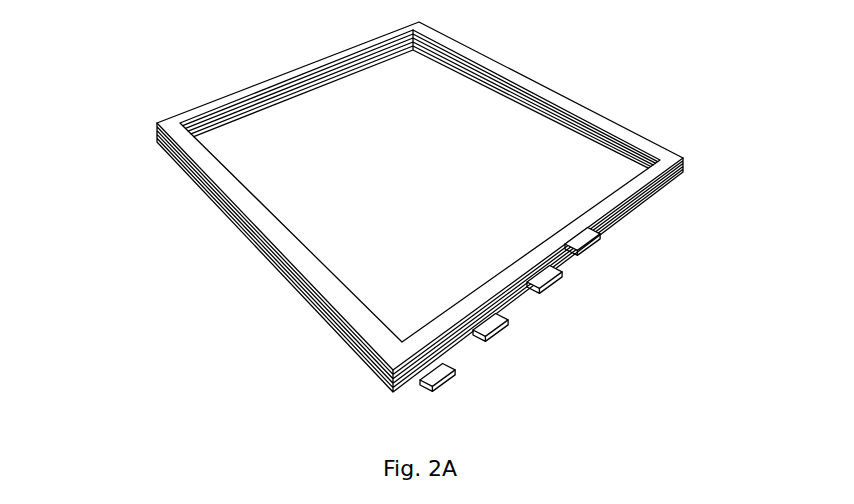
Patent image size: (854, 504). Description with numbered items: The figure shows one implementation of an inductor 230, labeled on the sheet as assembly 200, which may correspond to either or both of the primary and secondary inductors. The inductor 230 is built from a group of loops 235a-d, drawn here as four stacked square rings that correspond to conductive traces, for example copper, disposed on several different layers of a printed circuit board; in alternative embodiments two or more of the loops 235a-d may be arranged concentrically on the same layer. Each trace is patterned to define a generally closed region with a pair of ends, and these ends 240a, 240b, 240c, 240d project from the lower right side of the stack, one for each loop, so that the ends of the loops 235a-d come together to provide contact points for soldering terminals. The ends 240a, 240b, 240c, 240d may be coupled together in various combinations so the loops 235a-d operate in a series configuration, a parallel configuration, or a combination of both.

The layered antenna / coil device 200 is at (373, 263).
The inductor 230 is at (118, 68).
The group of loops 235a-d is at (134, 136).
The end of loop 240a is at (603, 259).
The end of loop 240b is at (566, 304).
The end of loop 240c is at (513, 341).
The end of loop 240d is at (468, 380).